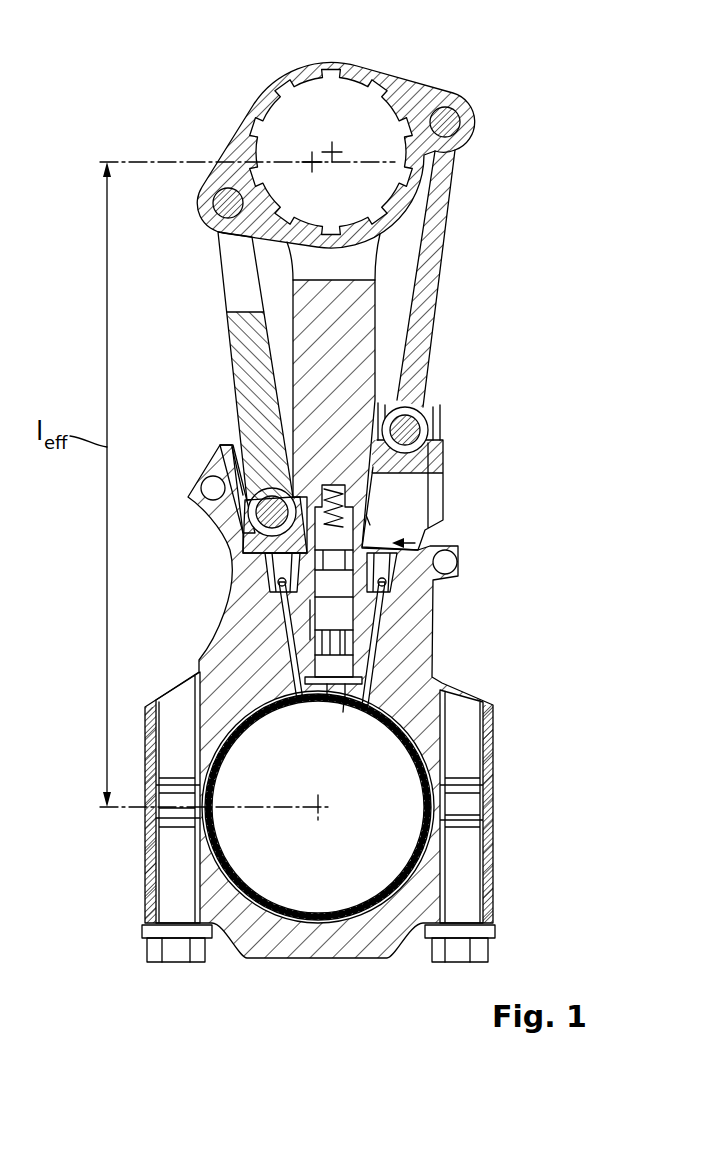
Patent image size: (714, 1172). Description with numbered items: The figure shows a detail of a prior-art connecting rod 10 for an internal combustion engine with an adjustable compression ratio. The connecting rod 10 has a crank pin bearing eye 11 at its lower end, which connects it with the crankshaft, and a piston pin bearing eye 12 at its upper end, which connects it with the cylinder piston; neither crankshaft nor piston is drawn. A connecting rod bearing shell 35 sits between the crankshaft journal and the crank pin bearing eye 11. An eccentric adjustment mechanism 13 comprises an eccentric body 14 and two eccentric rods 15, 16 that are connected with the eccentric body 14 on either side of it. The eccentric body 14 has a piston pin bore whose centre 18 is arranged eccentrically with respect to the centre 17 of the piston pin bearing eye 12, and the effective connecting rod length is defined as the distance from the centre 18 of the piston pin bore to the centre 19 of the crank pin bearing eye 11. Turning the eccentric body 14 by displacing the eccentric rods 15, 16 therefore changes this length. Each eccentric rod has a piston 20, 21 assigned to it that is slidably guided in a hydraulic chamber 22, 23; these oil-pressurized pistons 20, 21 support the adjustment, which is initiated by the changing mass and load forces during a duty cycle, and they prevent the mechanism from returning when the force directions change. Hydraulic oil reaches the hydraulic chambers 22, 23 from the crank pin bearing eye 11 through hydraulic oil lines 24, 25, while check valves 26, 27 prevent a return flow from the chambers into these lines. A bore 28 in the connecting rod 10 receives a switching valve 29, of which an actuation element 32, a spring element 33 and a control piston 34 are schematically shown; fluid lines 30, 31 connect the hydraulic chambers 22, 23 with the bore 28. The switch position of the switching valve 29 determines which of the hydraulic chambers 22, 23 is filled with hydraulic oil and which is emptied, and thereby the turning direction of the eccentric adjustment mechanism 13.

The connecting rod 10 is at (413, 653).
The crank pin bearing eye 11 is at (378, 846).
The piston pin bearing eye 12 is at (360, 110).
The eccentric adjustment mechanism 13 is at (275, 68).
The eccentric body 14 is at (423, 97).
The eccentric rod 15 is at (242, 357).
The eccentric rod 16 is at (428, 292).
The centre of the piston pin bearing eye 17 is at (332, 150).
The centre of the piston pin bore 18 is at (312, 160).
The centre of the crank pin bearing eye 19 is at (326, 804).
The piston 20 is at (421, 462).
The piston 21 is at (262, 537).
The hydraulic chamber 22 is at (458, 556).
The hydraulic chamber 23 is at (240, 455).
The hydraulic oil line 24 is at (350, 618).
The hydraulic oil line 25 is at (312, 618).
The check valve 26 is at (395, 572).
The check valve 27 is at (288, 584).
The bore 28 is at (370, 520).
The switching valve 29 is at (350, 715).
The fluid line 30 is at (404, 543).
The fluid line 31 is at (268, 560).
The actuation element 32 is at (323, 668).
The spring element 33 is at (372, 493).
The control piston 34 is at (243, 530).
The connecting rod bearing shell 35 is at (338, 914).